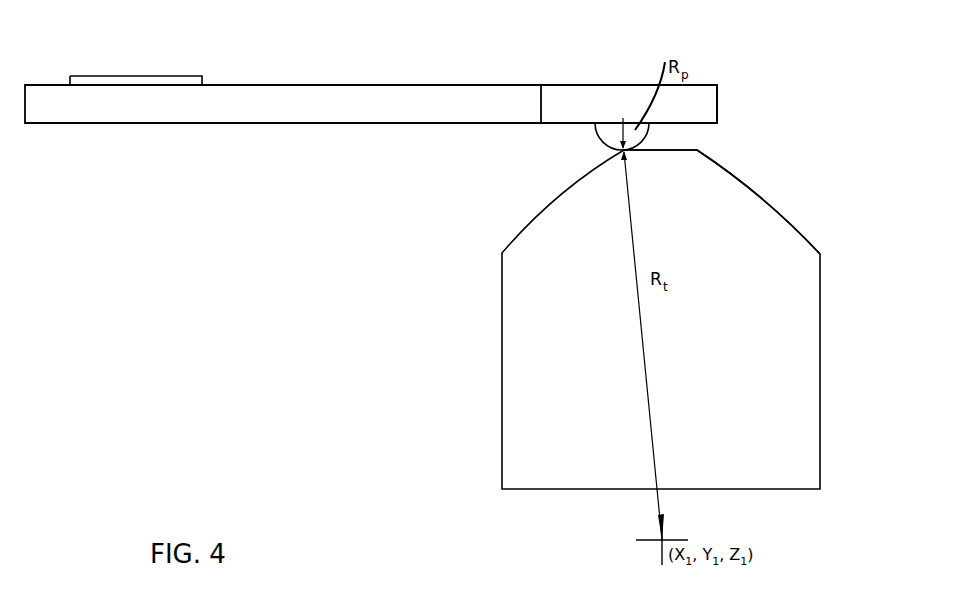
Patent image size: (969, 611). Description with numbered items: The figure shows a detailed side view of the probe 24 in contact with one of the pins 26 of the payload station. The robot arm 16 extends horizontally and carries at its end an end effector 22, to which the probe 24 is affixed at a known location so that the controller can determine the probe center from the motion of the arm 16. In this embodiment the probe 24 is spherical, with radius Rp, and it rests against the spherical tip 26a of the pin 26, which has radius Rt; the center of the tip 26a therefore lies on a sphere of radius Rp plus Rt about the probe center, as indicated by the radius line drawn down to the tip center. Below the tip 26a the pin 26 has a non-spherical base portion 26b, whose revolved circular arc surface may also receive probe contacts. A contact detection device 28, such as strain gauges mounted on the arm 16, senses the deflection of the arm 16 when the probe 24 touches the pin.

The robot arm 16 is at (213, 126).
The end effector 22 is at (598, 82).
The probe 24 is at (597, 132).
The pin 26 is at (822, 350).
The tip 26a is at (690, 147).
The base portion 26b is at (797, 220).
The contact detection device 28 is at (145, 76).